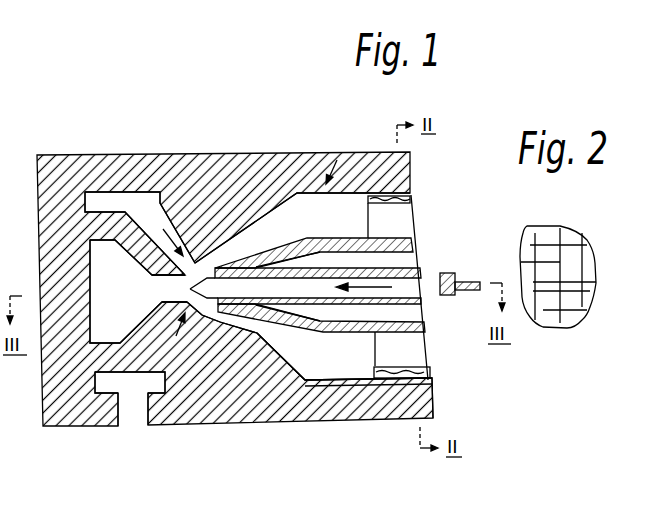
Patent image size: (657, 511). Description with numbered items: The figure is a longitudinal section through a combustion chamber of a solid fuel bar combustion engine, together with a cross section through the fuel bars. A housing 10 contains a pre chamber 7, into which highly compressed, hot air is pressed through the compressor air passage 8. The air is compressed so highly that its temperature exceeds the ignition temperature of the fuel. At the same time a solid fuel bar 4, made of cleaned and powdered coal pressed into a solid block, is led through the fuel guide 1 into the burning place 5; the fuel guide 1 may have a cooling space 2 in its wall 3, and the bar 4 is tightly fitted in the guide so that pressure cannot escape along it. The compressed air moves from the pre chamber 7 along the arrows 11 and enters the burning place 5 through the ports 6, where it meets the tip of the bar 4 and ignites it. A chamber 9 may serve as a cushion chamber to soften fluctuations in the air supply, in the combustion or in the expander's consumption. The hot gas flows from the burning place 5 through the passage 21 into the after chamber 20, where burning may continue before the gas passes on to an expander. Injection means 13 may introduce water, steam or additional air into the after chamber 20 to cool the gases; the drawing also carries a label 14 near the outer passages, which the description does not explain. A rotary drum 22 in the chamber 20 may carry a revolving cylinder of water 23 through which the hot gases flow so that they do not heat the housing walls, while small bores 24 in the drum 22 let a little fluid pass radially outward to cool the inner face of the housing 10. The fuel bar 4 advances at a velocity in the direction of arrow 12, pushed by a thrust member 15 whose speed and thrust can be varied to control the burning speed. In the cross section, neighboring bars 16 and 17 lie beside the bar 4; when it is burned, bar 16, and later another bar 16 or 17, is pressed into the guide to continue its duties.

In FIG. 1, the fuel guide 1 is at (309, 287).
In FIG. 1, the cooling space 2 is at (377, 312).
In FIG. 1, the wall 3 is at (350, 320).
In FIG. 1, the solid fuel bar 4 is at (318, 303).
In FIG. 2, the solid fuel bar 4 is at (542, 282).
In FIG. 1, the burning place 5 is at (193, 287).
In FIG. 1, the port 6 is at (190, 308).
In FIG. 1, the pre chamber 7 is at (108, 385).
In FIG. 1, the compressor air passage 8 is at (133, 412).
In FIG. 1, the cushion chamber 9 is at (97, 267).
In FIG. 1, the housing 10 is at (230, 400).
In FIG. 1, the arrow 11 is at (183, 318).
In FIG. 1, the arrow 12 is at (378, 274).
In FIG. 1, the injection means 13 is at (352, 157).
In FIG. 1, the outer channel 14 is at (330, 195).
In FIG. 1, the thrust member 15 is at (462, 292).
In FIG. 2, the bar 16 is at (542, 261).
In FIG. 2, the bar 17 is at (568, 284).
In FIG. 1, the after chamber 20 is at (303, 357).
In FIG. 1, the passage 21 is at (242, 323).
In FIG. 1, the rotary drum 22 is at (392, 380).
In FIG. 1, the water 23 is at (412, 202).
In FIG. 1, the small bores 24 is at (432, 383).